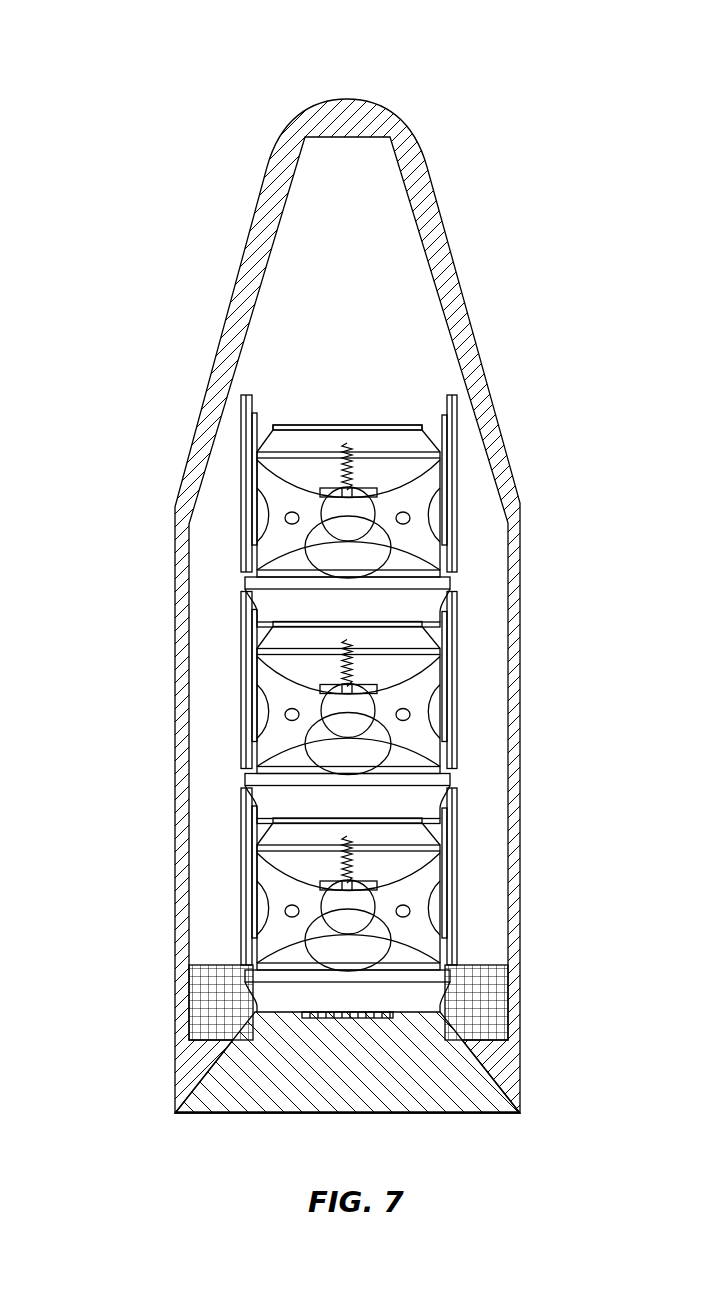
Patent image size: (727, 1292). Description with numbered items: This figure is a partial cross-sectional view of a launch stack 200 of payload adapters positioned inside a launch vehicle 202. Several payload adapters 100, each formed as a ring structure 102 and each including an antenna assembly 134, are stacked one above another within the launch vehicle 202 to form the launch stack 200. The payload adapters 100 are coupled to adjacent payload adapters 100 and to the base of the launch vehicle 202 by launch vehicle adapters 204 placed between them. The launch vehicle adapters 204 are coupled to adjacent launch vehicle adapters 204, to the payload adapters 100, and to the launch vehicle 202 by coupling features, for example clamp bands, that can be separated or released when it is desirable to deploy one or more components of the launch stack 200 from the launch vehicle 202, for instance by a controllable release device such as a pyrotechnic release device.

The launch vehicle 202 is at (178, 131).
The launch stack 200 is at (218, 488).
The launch vehicle adapter 204 is at (293, 440).
The payload adapter 100 is at (437, 679).
The ring structure 102 is at (262, 553).
The antenna assembly 134 is at (424, 452).